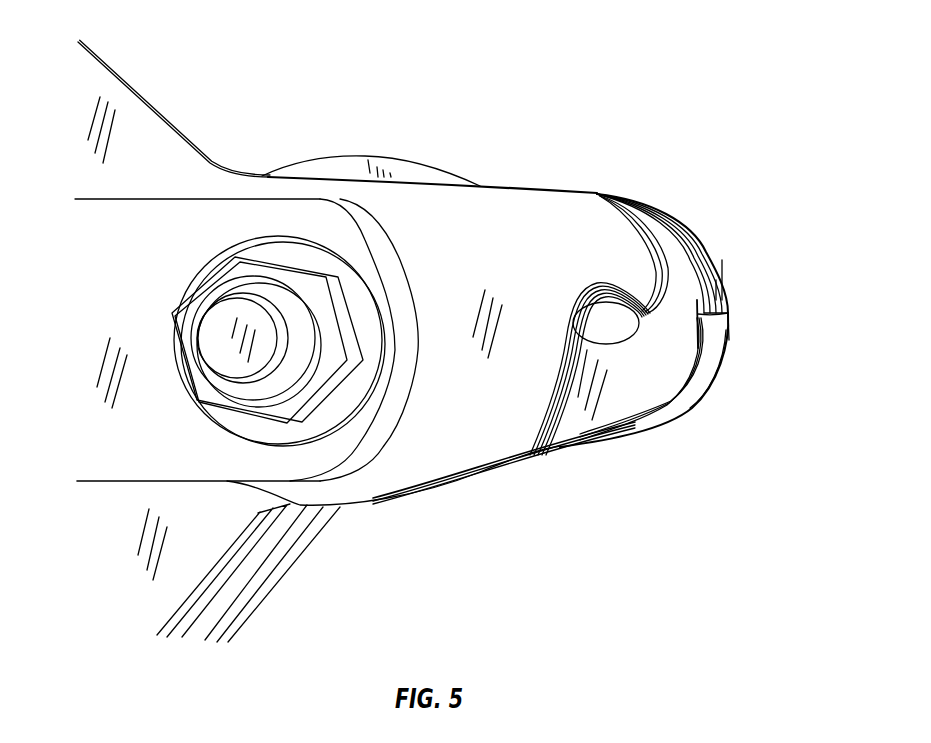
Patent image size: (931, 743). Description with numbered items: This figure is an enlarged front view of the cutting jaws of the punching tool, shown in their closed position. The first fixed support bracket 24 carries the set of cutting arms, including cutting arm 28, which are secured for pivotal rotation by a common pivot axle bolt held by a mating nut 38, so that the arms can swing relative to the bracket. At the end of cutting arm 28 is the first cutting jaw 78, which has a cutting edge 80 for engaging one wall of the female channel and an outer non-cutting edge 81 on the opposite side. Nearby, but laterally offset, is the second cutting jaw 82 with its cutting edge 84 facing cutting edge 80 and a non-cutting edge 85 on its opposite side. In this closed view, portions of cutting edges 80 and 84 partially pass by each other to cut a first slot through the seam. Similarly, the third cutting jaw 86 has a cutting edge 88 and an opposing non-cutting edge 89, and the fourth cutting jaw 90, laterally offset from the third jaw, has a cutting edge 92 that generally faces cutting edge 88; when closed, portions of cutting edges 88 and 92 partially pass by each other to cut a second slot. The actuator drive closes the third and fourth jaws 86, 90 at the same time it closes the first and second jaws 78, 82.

The first fixed support bracket 24 is at (145, 218).
The cutting arm 28 is at (60, 87).
The mating nut 38 is at (263, 258).
The first cutting jaw 78 is at (637, 280).
The cutting edge 80 is at (700, 277).
The outer non-cutting edge 81 is at (667, 273).
The second cutting jaw 82 is at (637, 410).
The cutting edge 84 is at (697, 348).
The non-cutting edge 85 is at (703, 370).
The third cutting jaw 86 is at (720, 289).
The cutting edge 88 is at (730, 273).
The non-cutting edge 89 is at (723, 315).
The fourth cutting jaw 90 is at (692, 407).
The cutting edge 92 is at (728, 333).